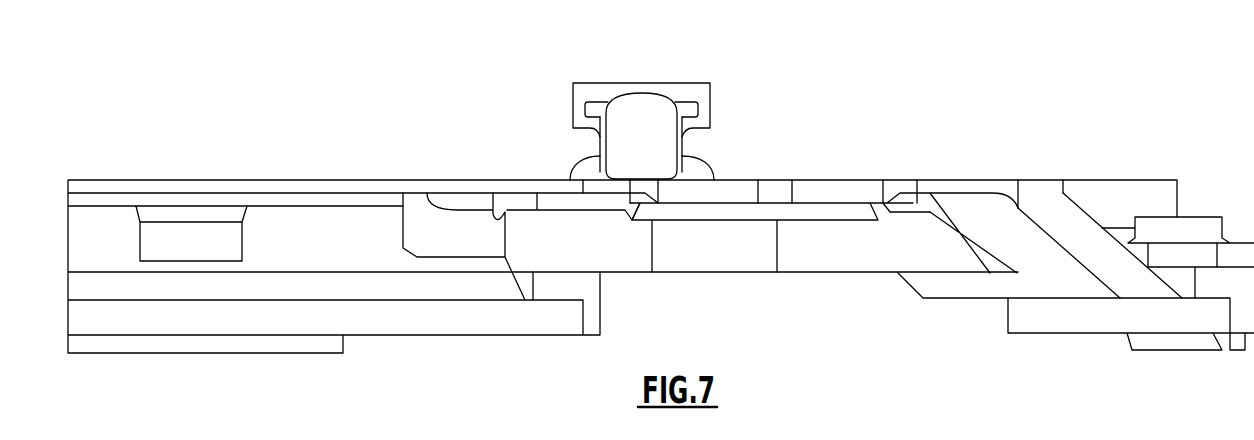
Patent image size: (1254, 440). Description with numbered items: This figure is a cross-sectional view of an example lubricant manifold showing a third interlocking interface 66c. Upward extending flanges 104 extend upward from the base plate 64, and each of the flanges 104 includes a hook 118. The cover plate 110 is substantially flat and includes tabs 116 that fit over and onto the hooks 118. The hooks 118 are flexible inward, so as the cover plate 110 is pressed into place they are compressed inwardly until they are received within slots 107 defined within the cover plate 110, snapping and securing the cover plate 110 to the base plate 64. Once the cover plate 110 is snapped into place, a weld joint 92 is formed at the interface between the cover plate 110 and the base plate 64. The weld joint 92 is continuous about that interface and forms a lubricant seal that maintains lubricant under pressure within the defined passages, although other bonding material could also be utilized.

The base plate 64 is at (1047, 205).
The third interlocking interface 66c is at (757, 98).
The weld joint 92 is at (580, 140).
The upward extending flanges 104 is at (570, 180).
The slots 107 is at (695, 106).
The cover plate 110 is at (665, 92).
The tabs 116 is at (583, 121).
The hooks 118 is at (588, 103).